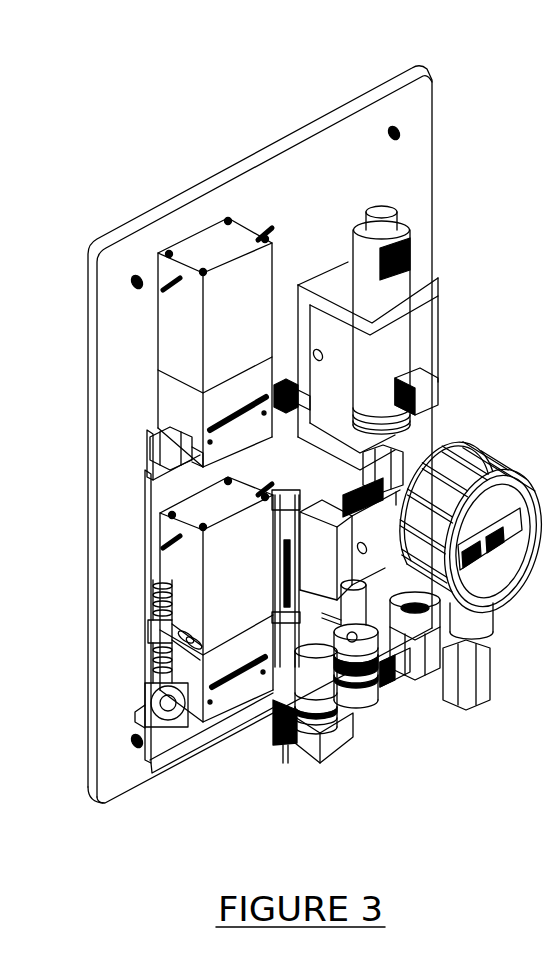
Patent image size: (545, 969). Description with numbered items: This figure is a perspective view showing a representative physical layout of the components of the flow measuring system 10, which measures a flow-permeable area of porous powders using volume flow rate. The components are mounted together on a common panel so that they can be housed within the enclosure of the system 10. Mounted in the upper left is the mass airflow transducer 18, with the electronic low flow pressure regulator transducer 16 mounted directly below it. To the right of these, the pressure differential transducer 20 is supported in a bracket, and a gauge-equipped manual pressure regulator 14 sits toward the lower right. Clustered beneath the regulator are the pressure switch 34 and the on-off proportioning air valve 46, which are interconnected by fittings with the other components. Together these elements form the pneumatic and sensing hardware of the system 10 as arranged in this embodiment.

The flow measuring system 10 is at (245, 114).
The manual pressure regulator 14 is at (408, 688).
The electronic low flow pressure regulator transducer 16 is at (172, 580).
The mass airflow transducer 18 is at (215, 250).
The pressure differential transducer 20 is at (395, 288).
The pressure switch 34 is at (380, 668).
The on-off proportioning air valve 46 is at (316, 745).